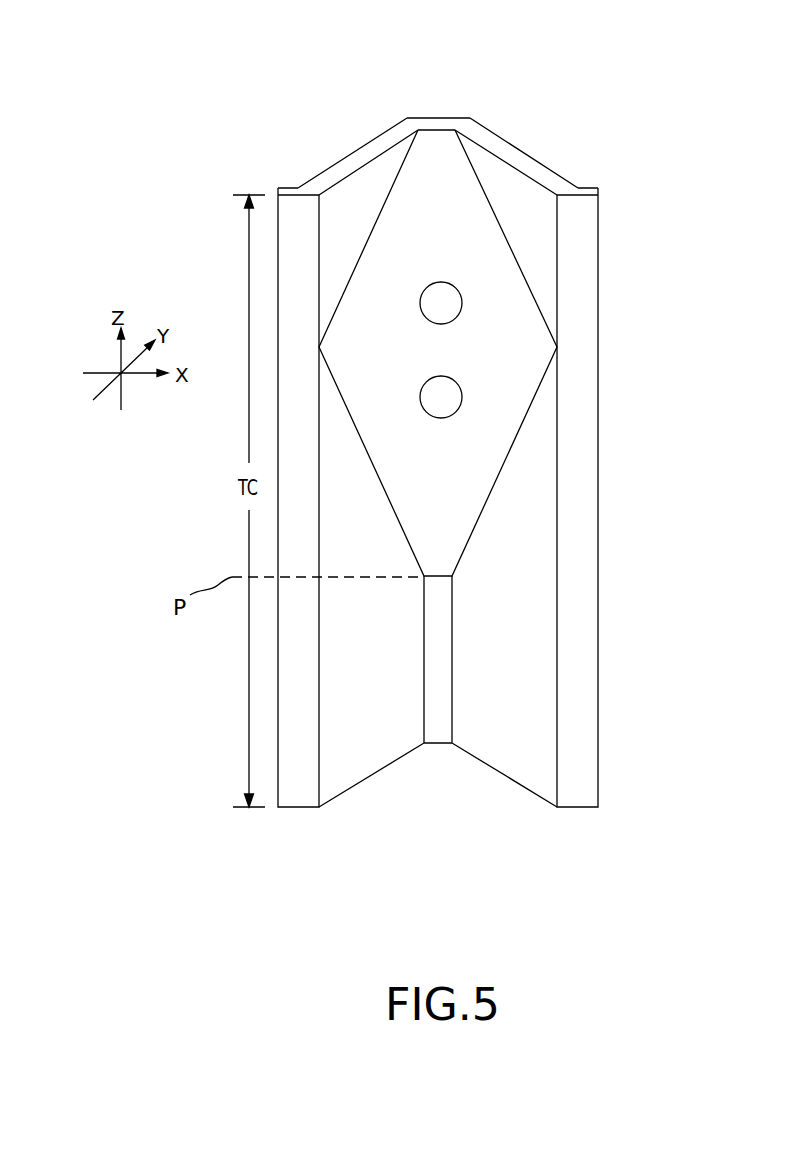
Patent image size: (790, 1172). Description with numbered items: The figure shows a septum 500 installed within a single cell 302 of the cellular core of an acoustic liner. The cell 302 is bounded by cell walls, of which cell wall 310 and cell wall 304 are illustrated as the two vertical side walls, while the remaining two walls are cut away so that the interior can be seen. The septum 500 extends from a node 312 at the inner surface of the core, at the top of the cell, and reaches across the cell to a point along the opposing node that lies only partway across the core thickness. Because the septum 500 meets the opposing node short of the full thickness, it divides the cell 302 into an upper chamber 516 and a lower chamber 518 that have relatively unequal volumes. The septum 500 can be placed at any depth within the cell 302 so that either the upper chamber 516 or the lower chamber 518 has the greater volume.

The cell 302 is at (469, 406).
The cell wall 304 is at (518, 150).
The cell wall 310 is at (357, 153).
The node 312 is at (433, 130).
The septum 500 is at (537, 340).
The upper chamber 516 is at (545, 240).
The lower chamber 518 is at (545, 709).